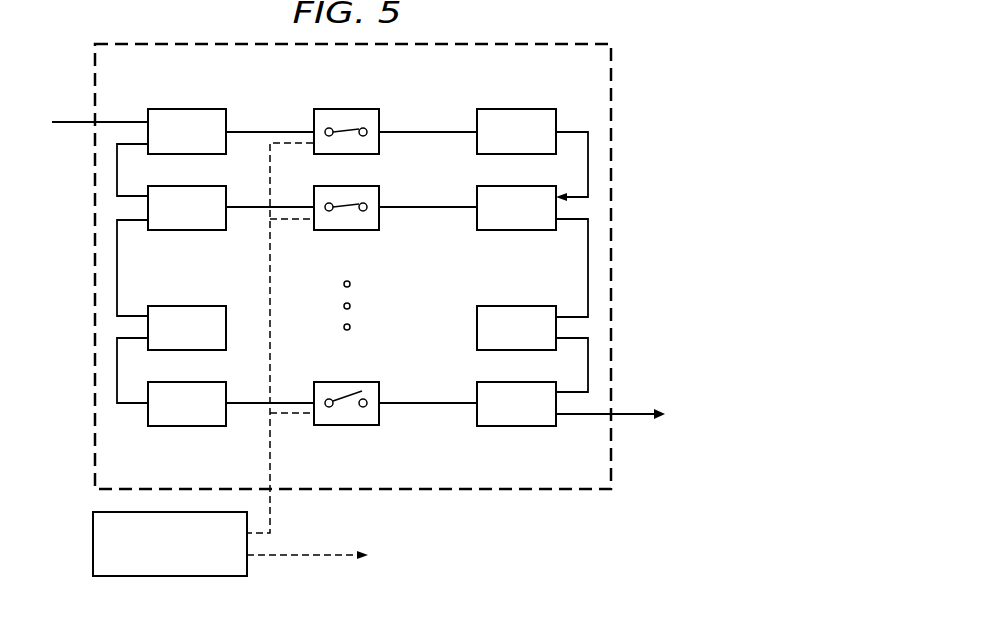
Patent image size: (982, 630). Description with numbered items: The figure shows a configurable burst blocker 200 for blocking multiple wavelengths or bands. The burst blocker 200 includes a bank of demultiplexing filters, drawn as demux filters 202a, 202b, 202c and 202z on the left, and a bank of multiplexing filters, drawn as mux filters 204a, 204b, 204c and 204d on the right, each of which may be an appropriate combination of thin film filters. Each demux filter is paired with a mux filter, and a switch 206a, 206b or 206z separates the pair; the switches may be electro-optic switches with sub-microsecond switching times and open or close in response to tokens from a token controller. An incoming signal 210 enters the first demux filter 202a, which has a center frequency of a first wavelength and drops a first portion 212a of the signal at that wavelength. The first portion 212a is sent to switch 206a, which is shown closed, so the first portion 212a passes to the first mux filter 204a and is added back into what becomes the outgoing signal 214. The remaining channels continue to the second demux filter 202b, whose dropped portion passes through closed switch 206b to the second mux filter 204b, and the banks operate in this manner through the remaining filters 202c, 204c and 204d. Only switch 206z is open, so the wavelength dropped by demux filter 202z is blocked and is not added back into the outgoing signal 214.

The configurable burst blocker 200 is at (623, 193).
The first demux filter 202a is at (192, 109).
The second demux filter 202b is at (169, 230).
The demux filter 202c is at (212, 306).
The demux filter 202z is at (188, 426).
The first mux filter 204a is at (513, 109).
The second mux filter 204b is at (493, 230).
The mux filter 204c is at (537, 305).
The mux filter 204d is at (527, 426).
The switch 206a is at (380, 121).
The switch 206b is at (380, 196).
The switch 206z is at (382, 416).
The incoming signal 210 is at (72, 121).
The first portion 212a is at (280, 130).
The outgoing signal 214 is at (637, 414).